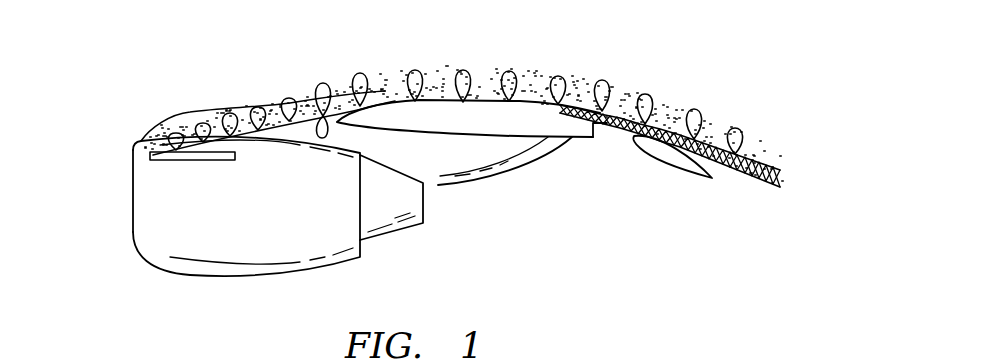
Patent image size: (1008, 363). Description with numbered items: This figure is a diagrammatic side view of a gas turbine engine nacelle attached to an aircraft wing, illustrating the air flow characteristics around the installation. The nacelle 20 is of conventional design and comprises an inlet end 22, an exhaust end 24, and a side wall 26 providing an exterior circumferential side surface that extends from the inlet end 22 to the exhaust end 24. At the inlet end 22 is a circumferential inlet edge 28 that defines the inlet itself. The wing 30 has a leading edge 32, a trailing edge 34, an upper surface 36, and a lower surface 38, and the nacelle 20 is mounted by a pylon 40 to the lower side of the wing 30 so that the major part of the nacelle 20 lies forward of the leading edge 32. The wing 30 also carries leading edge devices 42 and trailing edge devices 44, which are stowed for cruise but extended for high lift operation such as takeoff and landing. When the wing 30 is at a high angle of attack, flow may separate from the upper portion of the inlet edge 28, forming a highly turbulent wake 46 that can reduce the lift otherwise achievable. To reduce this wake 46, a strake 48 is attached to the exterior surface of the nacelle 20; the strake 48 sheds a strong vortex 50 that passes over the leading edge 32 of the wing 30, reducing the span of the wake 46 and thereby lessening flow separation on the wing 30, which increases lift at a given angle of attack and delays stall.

The nacelle 20 is at (161, 272).
The inlet end 22 is at (133, 206).
The exhaust end 24 is at (406, 236).
The side wall 26 is at (220, 228).
The inlet edge 28 is at (134, 248).
The wing 30 is at (480, 141).
The leading edge 32 is at (324, 116).
The trailing edge 34 is at (603, 127).
The upper surface 36 is at (526, 100).
The lower surface 38 is at (533, 141).
The pylon 40 is at (407, 169).
The leading edge devices 42 is at (312, 97).
The trailing edge devices 44 is at (697, 175).
The wake 46 is at (431, 83).
The strake 48 is at (203, 157).
The vortex 50 is at (461, 64).